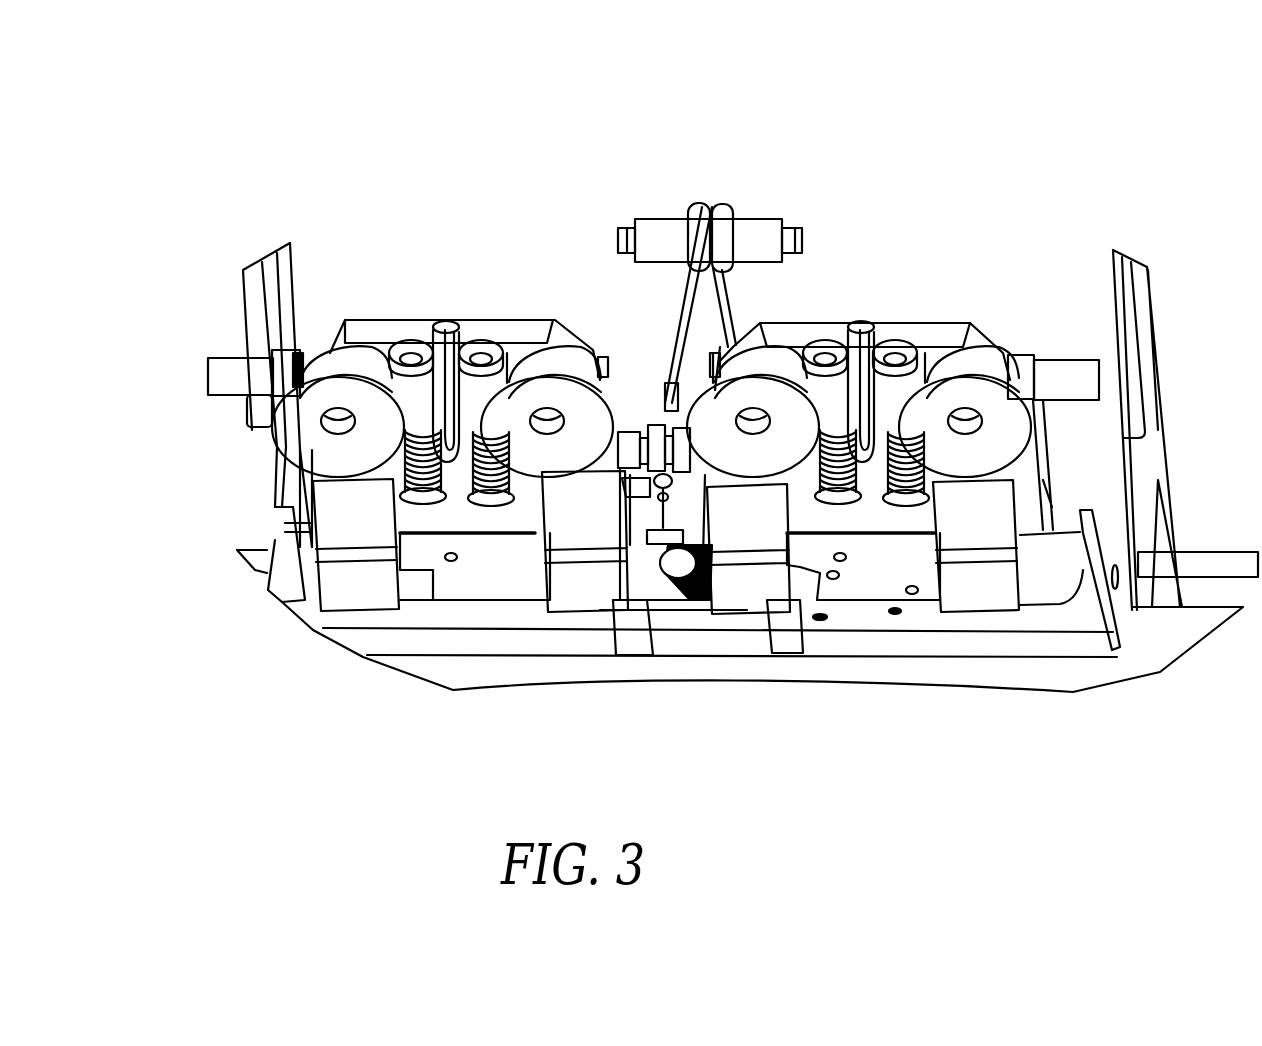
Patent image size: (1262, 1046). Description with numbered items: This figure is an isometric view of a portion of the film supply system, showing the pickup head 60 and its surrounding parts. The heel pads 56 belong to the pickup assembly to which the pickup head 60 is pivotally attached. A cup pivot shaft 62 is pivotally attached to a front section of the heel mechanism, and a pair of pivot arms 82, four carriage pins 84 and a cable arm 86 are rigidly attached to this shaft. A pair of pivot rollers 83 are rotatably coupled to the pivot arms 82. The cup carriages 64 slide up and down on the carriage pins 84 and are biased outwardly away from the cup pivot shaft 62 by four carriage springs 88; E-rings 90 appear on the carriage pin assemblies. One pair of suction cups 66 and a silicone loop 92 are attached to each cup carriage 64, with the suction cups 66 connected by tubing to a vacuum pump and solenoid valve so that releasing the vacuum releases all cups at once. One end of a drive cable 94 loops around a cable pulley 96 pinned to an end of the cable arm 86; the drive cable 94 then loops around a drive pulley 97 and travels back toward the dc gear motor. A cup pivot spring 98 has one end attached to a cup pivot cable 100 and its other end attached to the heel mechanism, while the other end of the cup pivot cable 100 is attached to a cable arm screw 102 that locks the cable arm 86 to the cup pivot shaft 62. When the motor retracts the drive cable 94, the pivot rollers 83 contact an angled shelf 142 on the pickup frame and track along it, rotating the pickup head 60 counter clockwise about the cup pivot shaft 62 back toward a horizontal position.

The pickup head 60 is at (1137, 150).
The heel pads 56 is at (958, 513).
The cup pivot shaft 62 is at (880, 525).
The cup carriages 64 is at (410, 330).
The suction cups 66 is at (335, 390).
The pivot arms 82 is at (1013, 377).
The pivot rollers 83 is at (225, 370).
The carriage pins 84 is at (372, 520).
The cable arm 86 is at (622, 496).
The carriage springs 88 is at (405, 513).
The E-rings 90 is at (487, 345).
The silicone loop 92 is at (447, 323).
The drive cable 94 is at (690, 287).
The cable pulley 96 is at (663, 420).
The drive pulley 97 is at (752, 233).
The cup pivot spring 98 is at (697, 575).
The cup pivot cable 100 is at (624, 520).
The cable arm screw 102 is at (703, 502).
The angled shelf 142 is at (1137, 328).